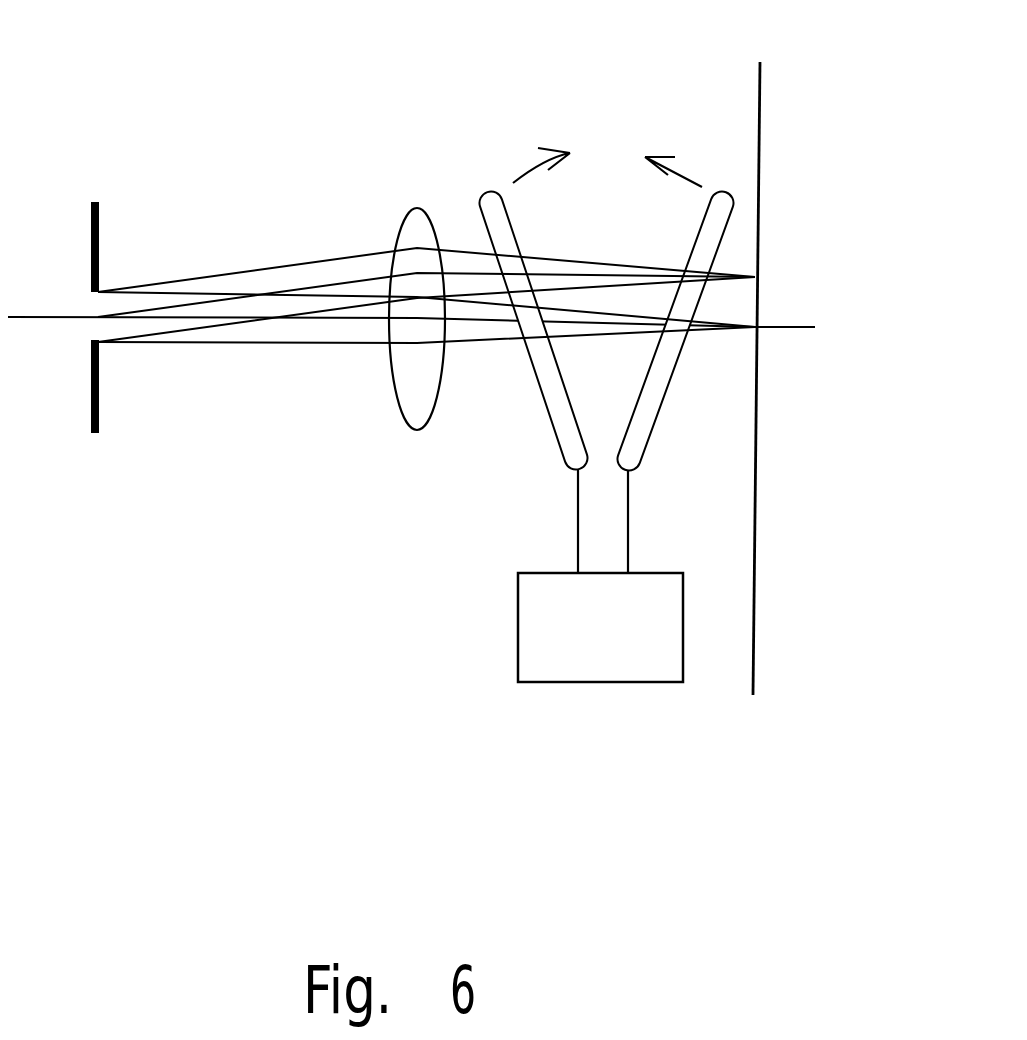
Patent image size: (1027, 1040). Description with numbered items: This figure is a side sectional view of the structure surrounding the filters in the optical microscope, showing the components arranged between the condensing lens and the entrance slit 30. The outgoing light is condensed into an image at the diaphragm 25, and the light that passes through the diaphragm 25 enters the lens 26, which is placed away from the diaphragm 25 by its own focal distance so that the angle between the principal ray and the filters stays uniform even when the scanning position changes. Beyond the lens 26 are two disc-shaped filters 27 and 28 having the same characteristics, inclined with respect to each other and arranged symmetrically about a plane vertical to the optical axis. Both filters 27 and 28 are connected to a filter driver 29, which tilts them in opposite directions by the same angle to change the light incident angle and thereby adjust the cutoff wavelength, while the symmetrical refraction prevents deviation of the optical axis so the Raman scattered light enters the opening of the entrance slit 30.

The diaphragm 25 is at (93, 434).
The lens 26 is at (417, 433).
The filter 27 is at (498, 190).
The filter 28 is at (720, 190).
The filter driver 29 is at (630, 684).
The entrance slit 30 is at (753, 645).